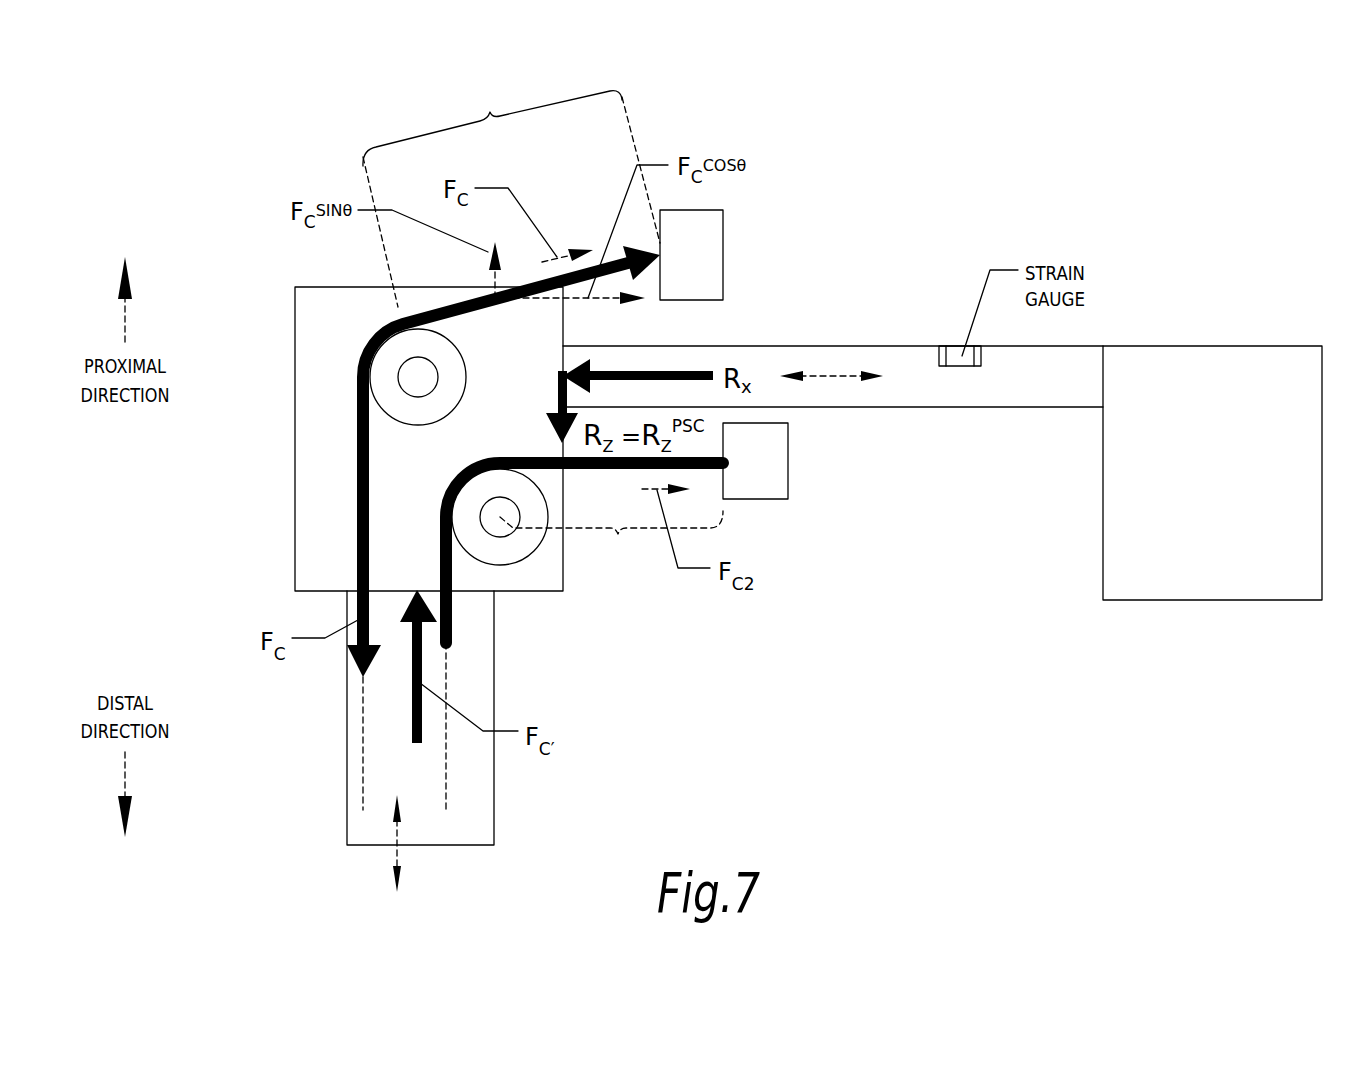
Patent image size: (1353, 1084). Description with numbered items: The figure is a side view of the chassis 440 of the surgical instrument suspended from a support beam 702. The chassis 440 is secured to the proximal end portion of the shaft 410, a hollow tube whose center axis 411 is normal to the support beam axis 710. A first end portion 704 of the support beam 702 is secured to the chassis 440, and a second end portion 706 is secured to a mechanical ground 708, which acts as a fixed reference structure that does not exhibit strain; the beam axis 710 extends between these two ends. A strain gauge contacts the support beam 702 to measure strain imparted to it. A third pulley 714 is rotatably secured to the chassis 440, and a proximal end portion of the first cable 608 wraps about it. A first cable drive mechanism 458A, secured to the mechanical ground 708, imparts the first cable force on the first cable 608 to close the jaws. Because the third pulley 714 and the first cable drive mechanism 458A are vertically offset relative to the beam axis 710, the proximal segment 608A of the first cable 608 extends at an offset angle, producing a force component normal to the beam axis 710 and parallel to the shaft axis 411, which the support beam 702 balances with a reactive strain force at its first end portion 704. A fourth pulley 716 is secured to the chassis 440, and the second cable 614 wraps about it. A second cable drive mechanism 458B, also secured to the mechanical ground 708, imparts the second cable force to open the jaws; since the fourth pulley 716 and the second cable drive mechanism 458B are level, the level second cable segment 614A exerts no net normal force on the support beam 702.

The chassis 440 is at (295, 437).
The third pulley 714 is at (468, 376).
The fourth pulley 716 is at (478, 494).
The first cable 608 is at (360, 497).
The proximal segment of the first cable 608A is at (511, 193).
The second cable 614 is at (450, 622).
The level second cable segment 614A is at (611, 543).
The shaft 410 is at (347, 812).
The center axis 411 is at (393, 880).
The first cable drive mechanism 458A is at (726, 258).
The second cable drive mechanism 458B is at (790, 462).
The first end portion of the support beam 704 is at (690, 340).
The support beam axis 710 is at (830, 378).
The second end portion of the support beam 706 is at (1108, 300).
The support beam 702 is at (1053, 393).
The mechanical ground 708 is at (1220, 346).